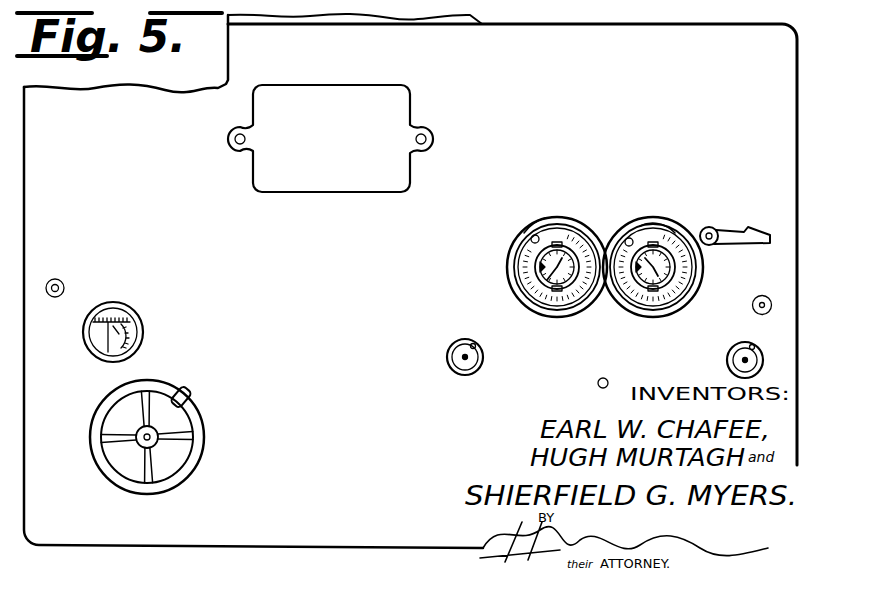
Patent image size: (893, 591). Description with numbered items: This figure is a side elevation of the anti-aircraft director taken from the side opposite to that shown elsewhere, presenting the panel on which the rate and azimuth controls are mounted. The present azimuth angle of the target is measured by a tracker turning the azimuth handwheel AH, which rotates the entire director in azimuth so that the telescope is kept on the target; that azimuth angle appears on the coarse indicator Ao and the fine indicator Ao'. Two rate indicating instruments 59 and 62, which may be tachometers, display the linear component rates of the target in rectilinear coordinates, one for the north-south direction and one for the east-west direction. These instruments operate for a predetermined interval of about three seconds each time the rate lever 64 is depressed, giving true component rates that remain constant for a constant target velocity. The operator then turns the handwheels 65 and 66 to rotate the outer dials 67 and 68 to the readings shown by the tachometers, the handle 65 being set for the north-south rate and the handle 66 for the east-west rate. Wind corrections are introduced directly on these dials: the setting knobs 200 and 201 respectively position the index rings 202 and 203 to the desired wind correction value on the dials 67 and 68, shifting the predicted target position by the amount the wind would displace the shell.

The rate indicating instrument 59 is at (548, 283).
The rate indicating instrument 62 is at (651, 282).
The rate lever 64 is at (735, 222).
The handwheel 65 is at (462, 376).
The handwheel 66 is at (727, 357).
The outer dial 67 is at (531, 241).
The outer dial 68 is at (666, 236).
The setting handwheel 200 is at (528, 236).
The setting handwheel 201 is at (630, 238).
The index ring 202 is at (573, 282).
The index ring 203 is at (668, 281).
The coarse azimuth indicator Ao is at (127, 321).
The fine azimuth indicator Ao' is at (153, 343).
The azimuth handwheel AH is at (152, 494).